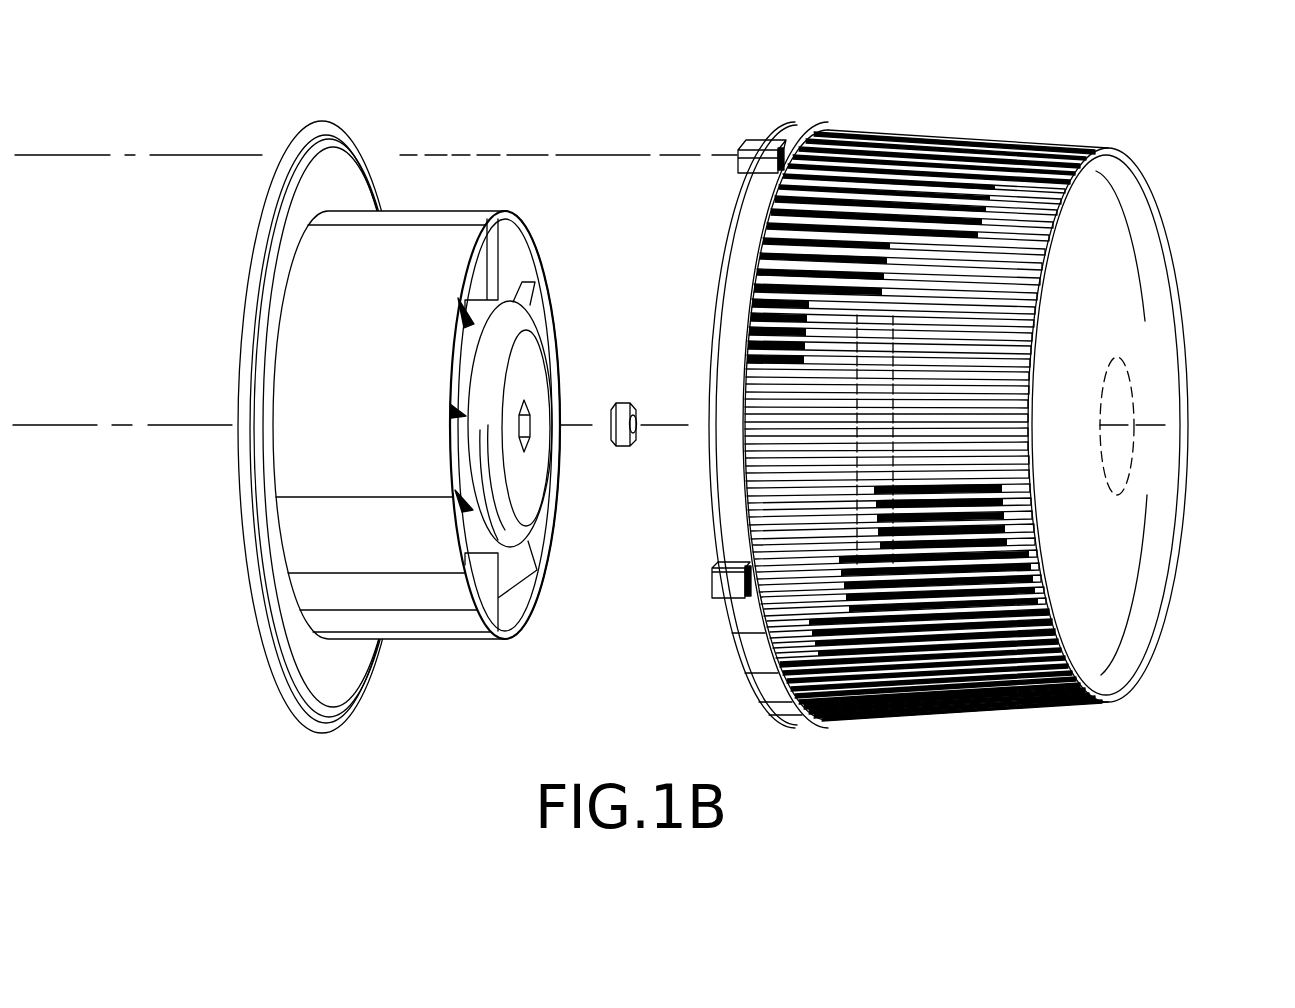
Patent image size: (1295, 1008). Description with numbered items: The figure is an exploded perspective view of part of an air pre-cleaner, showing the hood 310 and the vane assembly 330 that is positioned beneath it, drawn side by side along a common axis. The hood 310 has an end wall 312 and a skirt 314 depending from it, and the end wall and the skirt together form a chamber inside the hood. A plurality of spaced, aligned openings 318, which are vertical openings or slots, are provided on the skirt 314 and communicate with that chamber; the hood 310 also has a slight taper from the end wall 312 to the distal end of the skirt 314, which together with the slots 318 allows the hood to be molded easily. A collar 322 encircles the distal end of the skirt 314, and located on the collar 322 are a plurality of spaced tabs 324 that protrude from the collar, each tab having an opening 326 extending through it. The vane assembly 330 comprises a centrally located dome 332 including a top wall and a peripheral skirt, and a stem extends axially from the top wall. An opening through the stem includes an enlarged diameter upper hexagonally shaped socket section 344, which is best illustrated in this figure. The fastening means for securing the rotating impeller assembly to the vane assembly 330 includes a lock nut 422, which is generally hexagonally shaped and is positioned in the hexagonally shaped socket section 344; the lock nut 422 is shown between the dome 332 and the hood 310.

The hood 310 is at (956, 419).
The end wall 312 is at (1130, 517).
The skirt 314 is at (917, 137).
The openings 318 is at (782, 308).
The collar 322 is at (781, 722).
The tabs 324 is at (722, 588).
The opening 326 is at (829, 126).
The vane assembly 330 is at (492, 205).
The dome 332 is at (535, 482).
The hexagonally shaped socket section 344 is at (530, 415).
The lock nut 422 is at (622, 446).